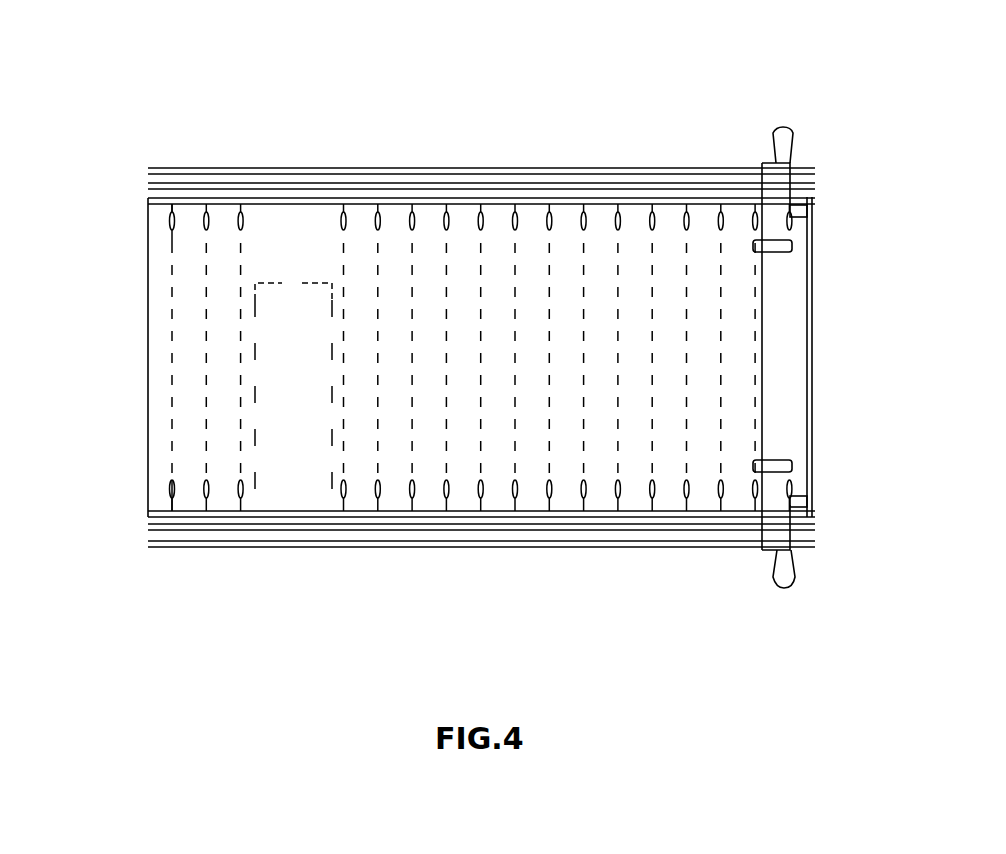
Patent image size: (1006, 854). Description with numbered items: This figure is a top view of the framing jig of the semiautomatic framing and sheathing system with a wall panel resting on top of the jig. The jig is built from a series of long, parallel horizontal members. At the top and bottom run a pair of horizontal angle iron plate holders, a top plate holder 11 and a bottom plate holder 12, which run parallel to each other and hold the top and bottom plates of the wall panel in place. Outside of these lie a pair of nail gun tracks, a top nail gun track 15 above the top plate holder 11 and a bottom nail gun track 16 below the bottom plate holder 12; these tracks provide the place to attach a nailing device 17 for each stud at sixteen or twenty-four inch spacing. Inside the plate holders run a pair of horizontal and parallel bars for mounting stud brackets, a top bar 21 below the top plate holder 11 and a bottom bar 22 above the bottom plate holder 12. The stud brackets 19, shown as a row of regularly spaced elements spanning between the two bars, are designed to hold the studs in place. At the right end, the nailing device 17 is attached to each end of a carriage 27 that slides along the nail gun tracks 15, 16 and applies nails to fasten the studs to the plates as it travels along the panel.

The top plate holder 11 is at (574, 187).
The bottom plate holder 12 is at (472, 530).
The top nail gun track 15 is at (630, 169).
The bottom nail gun track 16 is at (575, 545).
The nailing device 17 is at (790, 137).
The stud brackets 19 is at (210, 222).
The top bar 21 is at (540, 204).
The bottom bar 22 is at (400, 512).
The carriage 27 is at (812, 358).